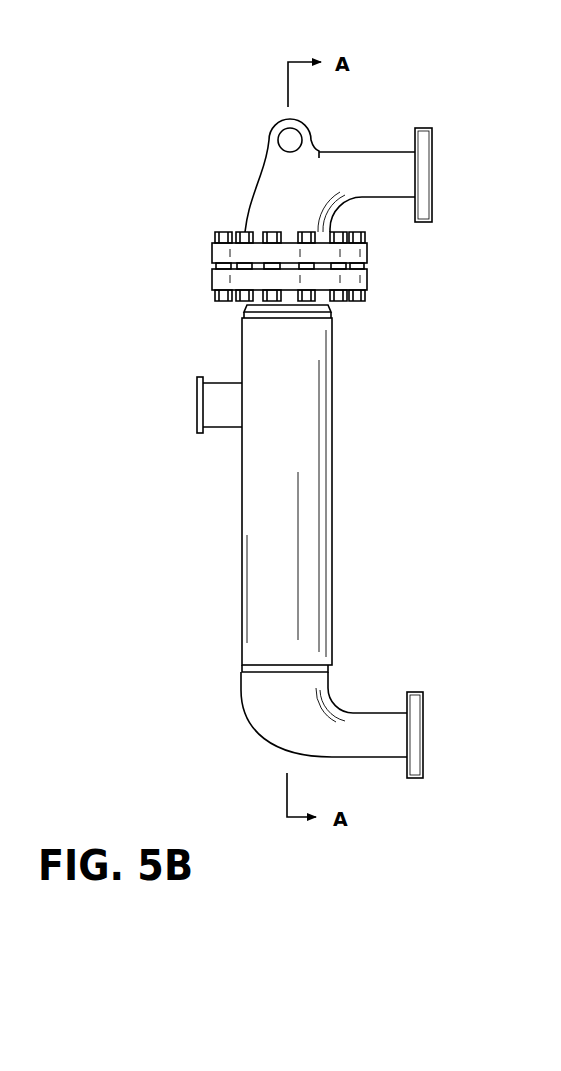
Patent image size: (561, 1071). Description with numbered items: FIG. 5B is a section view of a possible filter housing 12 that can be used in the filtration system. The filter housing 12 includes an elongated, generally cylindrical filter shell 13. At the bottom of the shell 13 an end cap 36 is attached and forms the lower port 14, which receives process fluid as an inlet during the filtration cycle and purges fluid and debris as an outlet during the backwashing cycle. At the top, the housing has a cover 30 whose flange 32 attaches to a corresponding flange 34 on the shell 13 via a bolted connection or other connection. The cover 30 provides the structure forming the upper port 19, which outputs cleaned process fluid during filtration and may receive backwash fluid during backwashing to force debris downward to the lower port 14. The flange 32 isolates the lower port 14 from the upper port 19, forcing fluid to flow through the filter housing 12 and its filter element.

The filter housing 12 is at (480, 748).
The filter shell 13 is at (308, 514).
The lower port 14 is at (388, 733).
The upper port 19 is at (378, 192).
The cover 30 is at (320, 151).
The flange 32 is at (367, 250).
The flange 34 is at (367, 280).
The end cap 36 is at (347, 757).